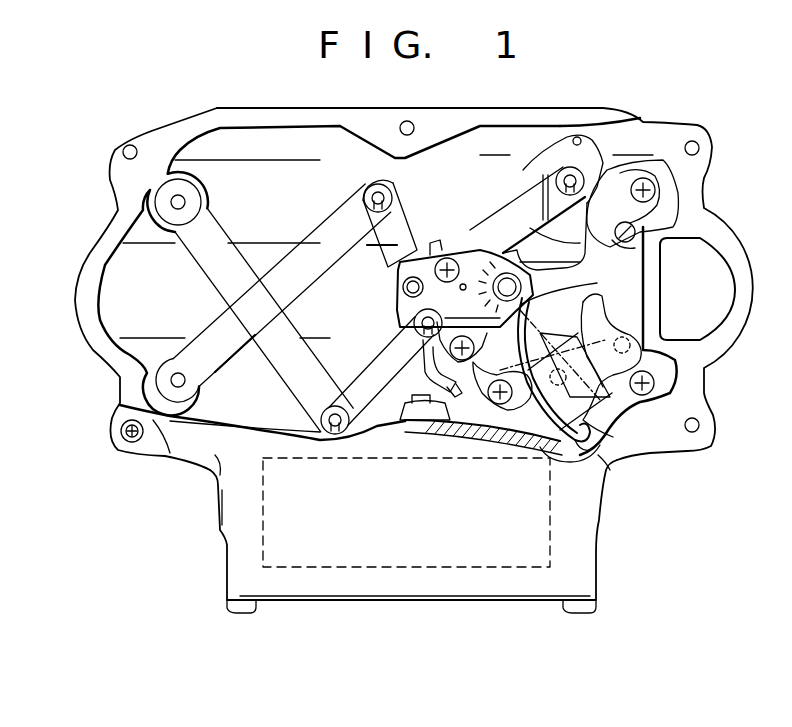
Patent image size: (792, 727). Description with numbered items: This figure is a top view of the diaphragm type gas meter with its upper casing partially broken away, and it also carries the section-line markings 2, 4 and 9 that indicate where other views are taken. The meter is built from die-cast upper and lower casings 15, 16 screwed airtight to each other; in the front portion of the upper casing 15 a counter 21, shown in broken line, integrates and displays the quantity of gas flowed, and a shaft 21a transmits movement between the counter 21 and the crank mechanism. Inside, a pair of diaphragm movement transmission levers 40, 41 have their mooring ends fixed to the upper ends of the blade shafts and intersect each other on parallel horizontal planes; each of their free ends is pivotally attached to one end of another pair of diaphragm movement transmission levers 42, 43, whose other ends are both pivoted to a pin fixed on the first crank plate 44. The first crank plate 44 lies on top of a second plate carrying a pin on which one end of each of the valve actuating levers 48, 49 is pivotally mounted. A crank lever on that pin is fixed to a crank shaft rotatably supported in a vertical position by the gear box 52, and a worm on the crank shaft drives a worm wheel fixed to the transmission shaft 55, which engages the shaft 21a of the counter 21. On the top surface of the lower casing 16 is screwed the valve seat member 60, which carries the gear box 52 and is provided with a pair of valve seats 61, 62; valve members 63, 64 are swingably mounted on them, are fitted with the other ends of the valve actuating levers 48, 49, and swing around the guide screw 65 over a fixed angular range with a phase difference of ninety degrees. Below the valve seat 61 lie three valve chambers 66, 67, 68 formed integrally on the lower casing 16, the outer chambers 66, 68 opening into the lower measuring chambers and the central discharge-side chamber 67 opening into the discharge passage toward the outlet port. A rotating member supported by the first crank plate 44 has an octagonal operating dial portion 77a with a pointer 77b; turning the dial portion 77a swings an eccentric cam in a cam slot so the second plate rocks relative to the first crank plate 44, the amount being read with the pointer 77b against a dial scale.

The upper casing 15 is at (587, 510).
The lower casing 16 is at (529, 120).
The counter 21 is at (492, 567).
The shaft 21a is at (419, 400).
The diaphragm movement transmission lever 40 is at (217, 330).
The diaphragm movement transmission lever 41 is at (222, 233).
The diaphragm movement transmission lever 42 is at (381, 196).
The diaphragm movement transmission lever 43 is at (387, 354).
The first crank plate 44 is at (390, 216).
The valve actuating lever 48 is at (515, 335).
The valve actuating lever 49 is at (547, 167).
The gear box 52 is at (400, 313).
The transmission shaft 55 is at (413, 363).
The valve seat member 60 is at (640, 277).
The valve seat 61 is at (608, 468).
The valve seat 62 is at (570, 133).
The valve member 63 is at (600, 307).
The valve member 64 is at (603, 180).
The guide screw 65 is at (635, 237).
The valve chamber 66 is at (553, 447).
The valve chamber 67 is at (577, 344).
The valve chamber 68 is at (588, 302).
The operating dial portion 77a is at (495, 271).
The pointer 77b is at (472, 311).
The section line 2- 2 is at (362, 290).
The section line 4- 4 is at (110, 380).
The section line 9- 9 is at (397, 290).